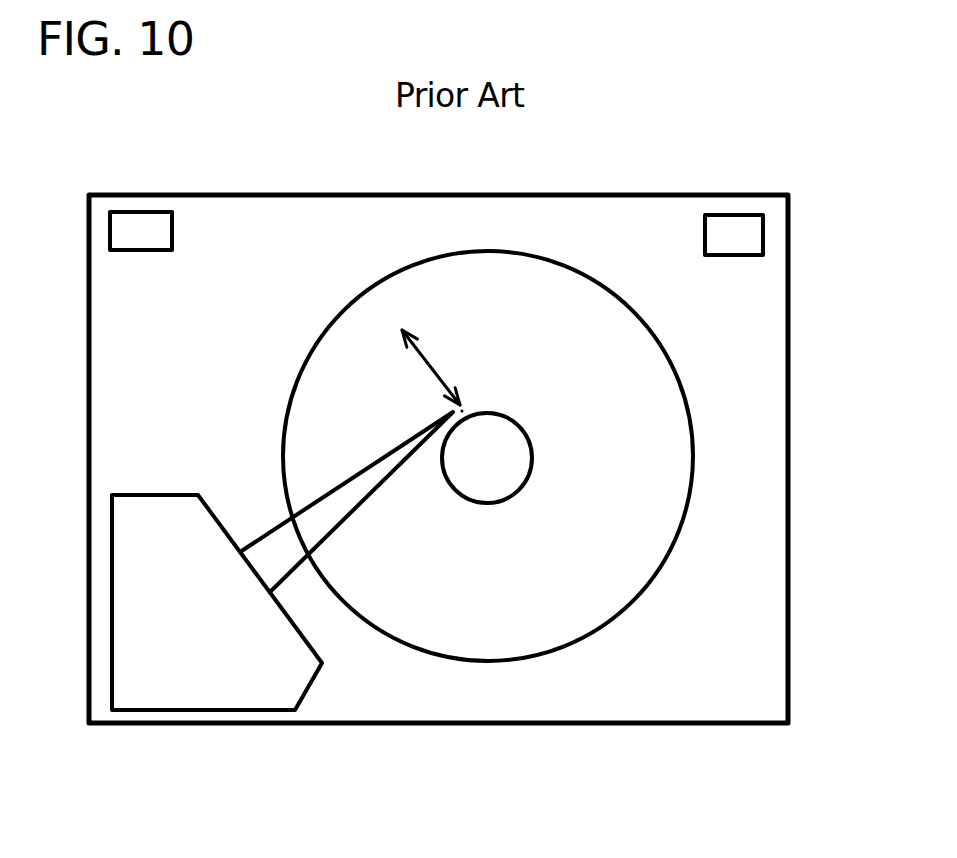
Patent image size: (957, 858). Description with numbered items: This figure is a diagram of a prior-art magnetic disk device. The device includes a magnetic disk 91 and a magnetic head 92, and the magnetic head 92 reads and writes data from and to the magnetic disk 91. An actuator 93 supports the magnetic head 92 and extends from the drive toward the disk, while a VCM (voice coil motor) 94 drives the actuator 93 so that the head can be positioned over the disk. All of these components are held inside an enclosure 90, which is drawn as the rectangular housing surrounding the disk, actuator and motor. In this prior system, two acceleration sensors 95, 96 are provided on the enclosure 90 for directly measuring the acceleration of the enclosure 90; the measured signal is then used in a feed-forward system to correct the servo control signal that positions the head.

The enclosure 90 is at (730, 725).
The magnetic disk 91 is at (670, 393).
The magnetic head 92 is at (422, 410).
The actuator 93 is at (280, 520).
The VCM (voice coil motor) 94 is at (110, 628).
The acceleration sensor 95 is at (763, 216).
The acceleration sensor 96 is at (143, 211).